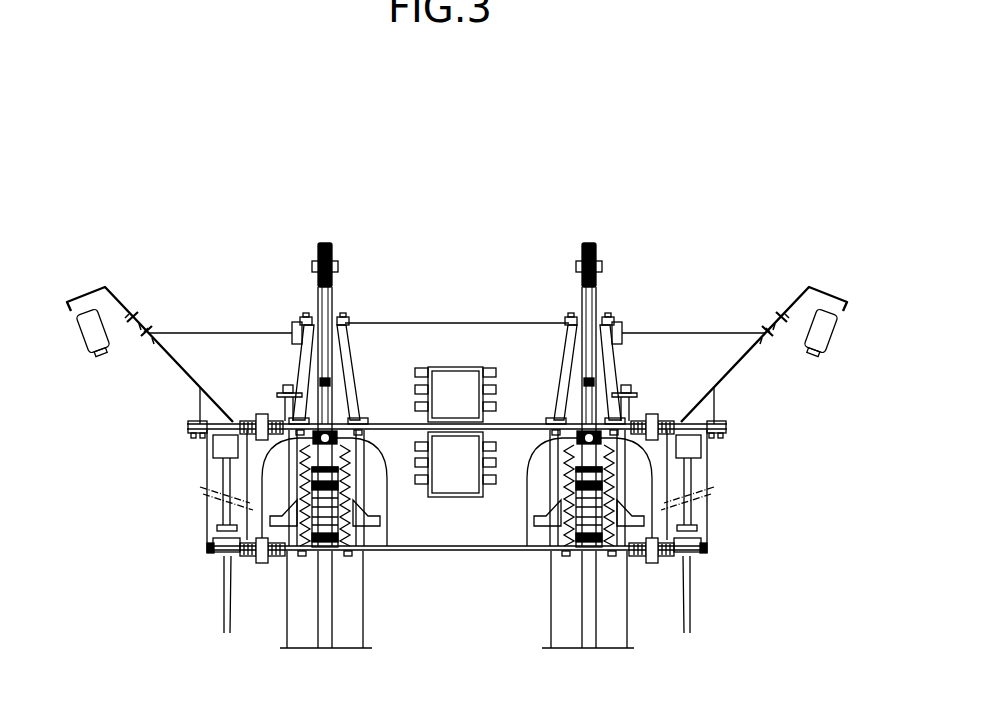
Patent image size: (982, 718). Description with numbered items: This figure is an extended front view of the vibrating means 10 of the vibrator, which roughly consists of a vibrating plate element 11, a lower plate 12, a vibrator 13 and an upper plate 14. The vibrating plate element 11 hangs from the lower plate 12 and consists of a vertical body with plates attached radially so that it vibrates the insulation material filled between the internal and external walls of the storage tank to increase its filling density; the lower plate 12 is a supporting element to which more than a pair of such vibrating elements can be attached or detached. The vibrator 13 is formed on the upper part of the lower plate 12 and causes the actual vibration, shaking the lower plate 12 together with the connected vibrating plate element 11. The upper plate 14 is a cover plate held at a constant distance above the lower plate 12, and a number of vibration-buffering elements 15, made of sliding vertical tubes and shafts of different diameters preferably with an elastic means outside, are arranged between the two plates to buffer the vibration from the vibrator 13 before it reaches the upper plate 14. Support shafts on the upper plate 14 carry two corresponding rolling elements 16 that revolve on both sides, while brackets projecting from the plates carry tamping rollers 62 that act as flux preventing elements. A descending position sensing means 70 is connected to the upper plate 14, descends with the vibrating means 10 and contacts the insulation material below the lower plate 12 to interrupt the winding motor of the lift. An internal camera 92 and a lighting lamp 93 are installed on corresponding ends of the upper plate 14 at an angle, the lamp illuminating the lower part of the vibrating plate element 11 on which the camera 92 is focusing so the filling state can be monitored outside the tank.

The vibrating means 10 is at (462, 284).
The vibrating plate element 11 is at (301, 627).
The lower plate 12 is at (481, 551).
The vibrator 13 is at (277, 472).
The upper plate 14 is at (530, 430).
The vibration-buffering element 15 is at (342, 523).
The rolling element 16 is at (333, 252).
The tamping roller 62 is at (250, 414).
The descending position sensing means 70 is at (222, 592).
The internal camera 92 is at (92, 340).
The lighting lamp 93 is at (822, 347).